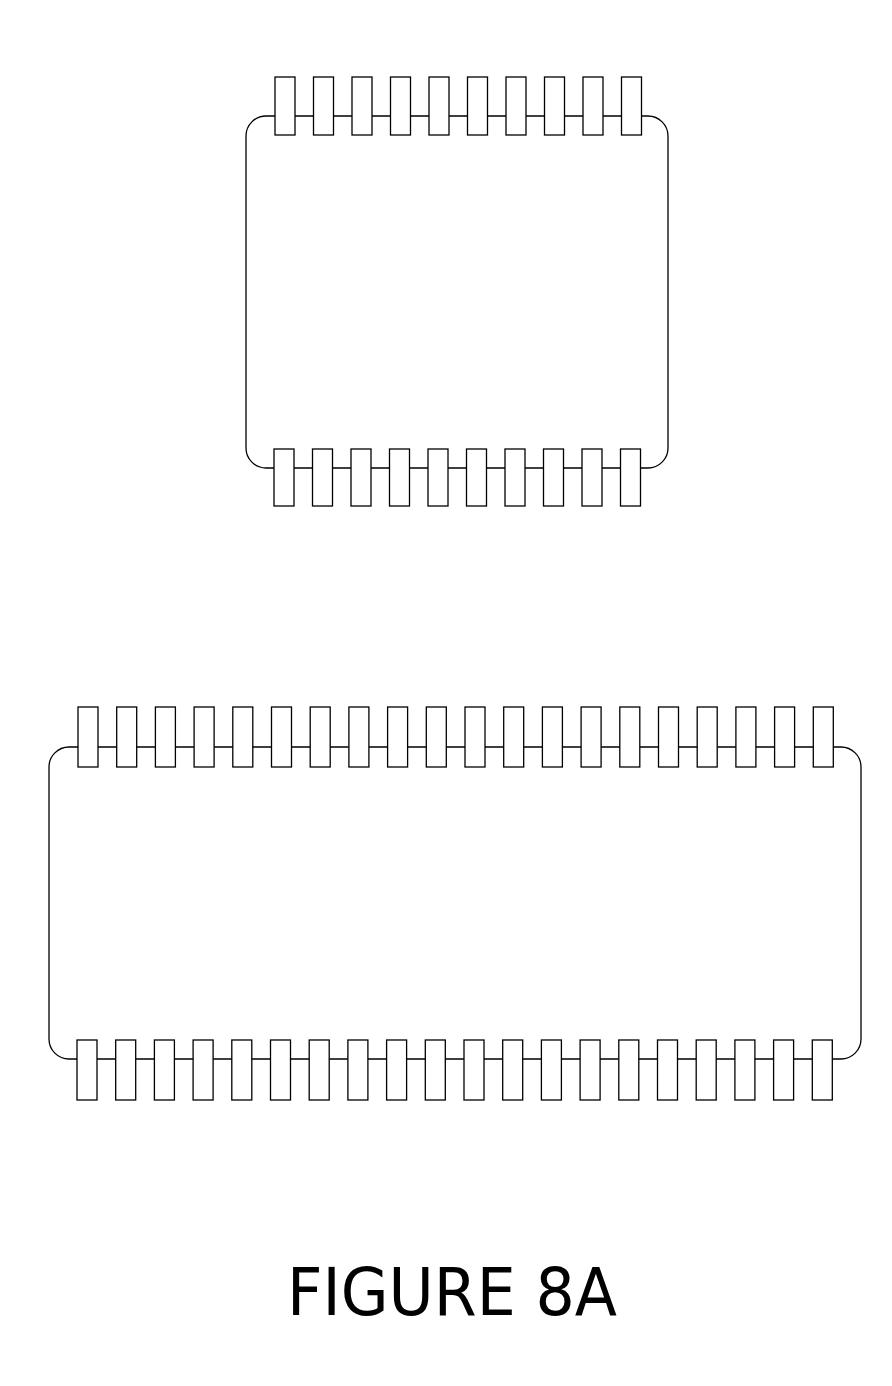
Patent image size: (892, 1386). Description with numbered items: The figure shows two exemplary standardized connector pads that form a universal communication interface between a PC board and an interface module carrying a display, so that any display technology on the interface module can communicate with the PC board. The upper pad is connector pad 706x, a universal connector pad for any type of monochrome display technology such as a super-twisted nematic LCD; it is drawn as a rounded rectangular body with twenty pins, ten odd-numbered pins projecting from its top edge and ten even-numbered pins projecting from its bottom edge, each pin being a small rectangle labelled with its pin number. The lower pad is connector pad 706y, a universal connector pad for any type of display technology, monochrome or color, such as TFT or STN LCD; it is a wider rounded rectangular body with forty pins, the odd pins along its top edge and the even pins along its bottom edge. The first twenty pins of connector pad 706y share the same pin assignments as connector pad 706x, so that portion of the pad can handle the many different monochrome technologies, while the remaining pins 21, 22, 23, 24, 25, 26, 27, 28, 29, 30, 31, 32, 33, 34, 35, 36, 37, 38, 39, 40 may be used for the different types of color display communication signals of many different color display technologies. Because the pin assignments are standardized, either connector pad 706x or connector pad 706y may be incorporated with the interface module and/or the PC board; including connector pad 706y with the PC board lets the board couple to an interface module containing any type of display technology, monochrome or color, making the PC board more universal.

The connector pad 706x is at (435, 310).
The connector pad 706y is at (432, 917).
The pin 21 is at (475, 707).
The pin 22 is at (474, 1100).
The pin 23 is at (514, 707).
The pin 24 is at (513, 1100).
The pin 25 is at (552, 707).
The pin 26 is at (551, 1100).
The pin 27 is at (591, 707).
The pin 28 is at (590, 1100).
The pin 29 is at (630, 707).
The pin 30 is at (629, 1100).
The pin 31 is at (668, 707).
The pin 32 is at (668, 1100).
The pin 33 is at (707, 707).
The pin 34 is at (706, 1100).
The pin 35 is at (746, 707).
The pin 36 is at (745, 1100).
The pin 37 is at (785, 707).
The pin 38 is at (784, 1100).
The pin 39 is at (823, 707).
The pin 40 is at (822, 1100).